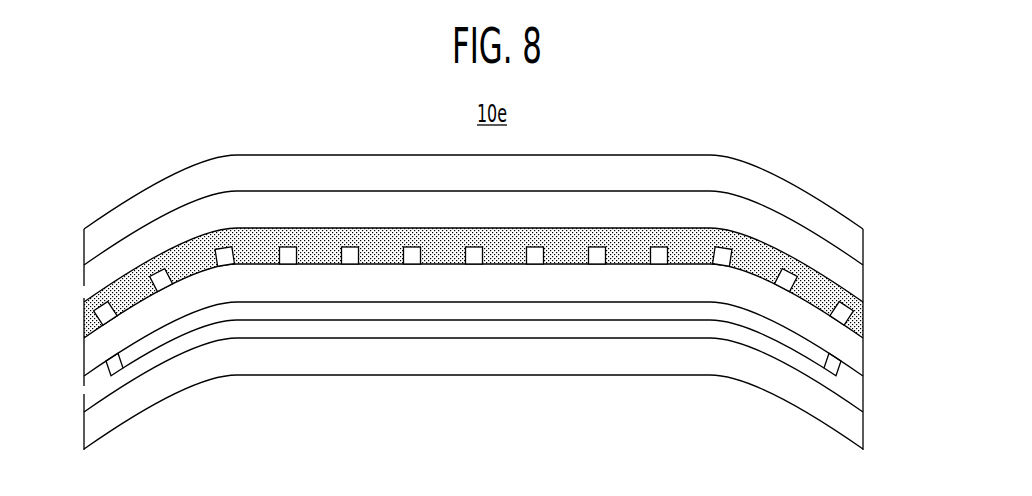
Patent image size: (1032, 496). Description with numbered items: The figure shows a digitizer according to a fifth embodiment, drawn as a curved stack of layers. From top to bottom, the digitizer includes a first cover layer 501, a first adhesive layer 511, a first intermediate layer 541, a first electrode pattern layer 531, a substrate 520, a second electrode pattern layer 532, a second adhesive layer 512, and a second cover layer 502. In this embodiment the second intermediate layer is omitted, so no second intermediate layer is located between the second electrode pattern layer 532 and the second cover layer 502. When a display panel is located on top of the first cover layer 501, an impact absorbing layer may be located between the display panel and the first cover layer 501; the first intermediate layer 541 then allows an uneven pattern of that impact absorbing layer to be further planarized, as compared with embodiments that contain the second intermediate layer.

The first cover layer 501 is at (853, 247).
The first adhesive layer 511 is at (853, 285).
The first intermediate layer 541 is at (853, 320).
The first electrode pattern layer 531 is at (85, 311).
The substrate 520 is at (853, 357).
The second electrode pattern layer 532 is at (106, 360).
The second adhesive layer 512 is at (853, 393).
The second cover layer 502 is at (853, 430).